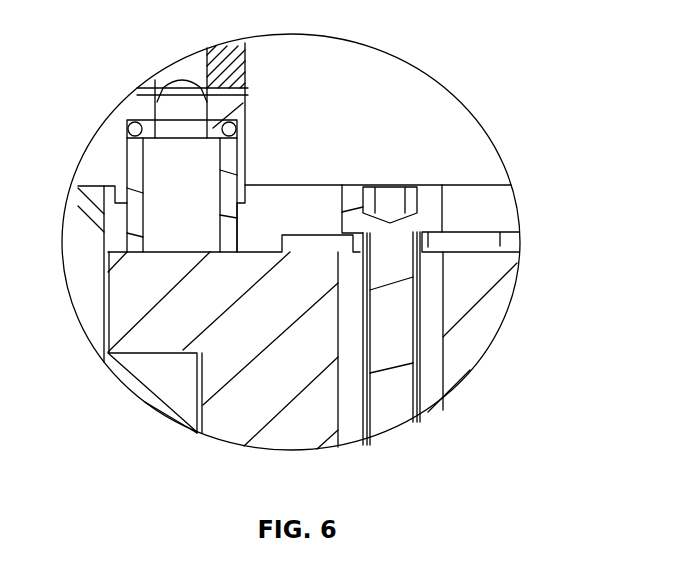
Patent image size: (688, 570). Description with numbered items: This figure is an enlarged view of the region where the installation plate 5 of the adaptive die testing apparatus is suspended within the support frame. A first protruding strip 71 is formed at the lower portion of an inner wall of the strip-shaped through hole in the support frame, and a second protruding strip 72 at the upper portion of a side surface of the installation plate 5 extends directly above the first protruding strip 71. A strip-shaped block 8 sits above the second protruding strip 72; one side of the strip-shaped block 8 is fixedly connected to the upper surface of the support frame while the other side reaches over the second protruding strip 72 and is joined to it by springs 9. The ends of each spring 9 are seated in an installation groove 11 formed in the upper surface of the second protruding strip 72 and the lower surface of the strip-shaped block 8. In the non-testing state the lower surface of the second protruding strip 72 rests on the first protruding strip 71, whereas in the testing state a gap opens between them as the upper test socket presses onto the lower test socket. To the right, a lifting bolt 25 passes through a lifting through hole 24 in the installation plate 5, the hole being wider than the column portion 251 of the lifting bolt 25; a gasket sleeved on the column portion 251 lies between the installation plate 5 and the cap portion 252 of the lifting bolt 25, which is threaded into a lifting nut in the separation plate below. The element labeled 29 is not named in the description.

The installation plate 5 is at (280, 390).
The strip-shaped block 8 is at (230, 70).
The spring 9 is at (78, 181).
The installation groove 11 is at (123, 130).
The lifting through hole 24 is at (433, 357).
The lifting bolt 25 is at (392, 256).
The flange 29 is at (470, 243).
The first protruding strip 71 is at (175, 393).
The second protruding strip 72 is at (155, 322).
The column portion 251 is at (383, 380).
The cap portion 252 is at (447, 185).